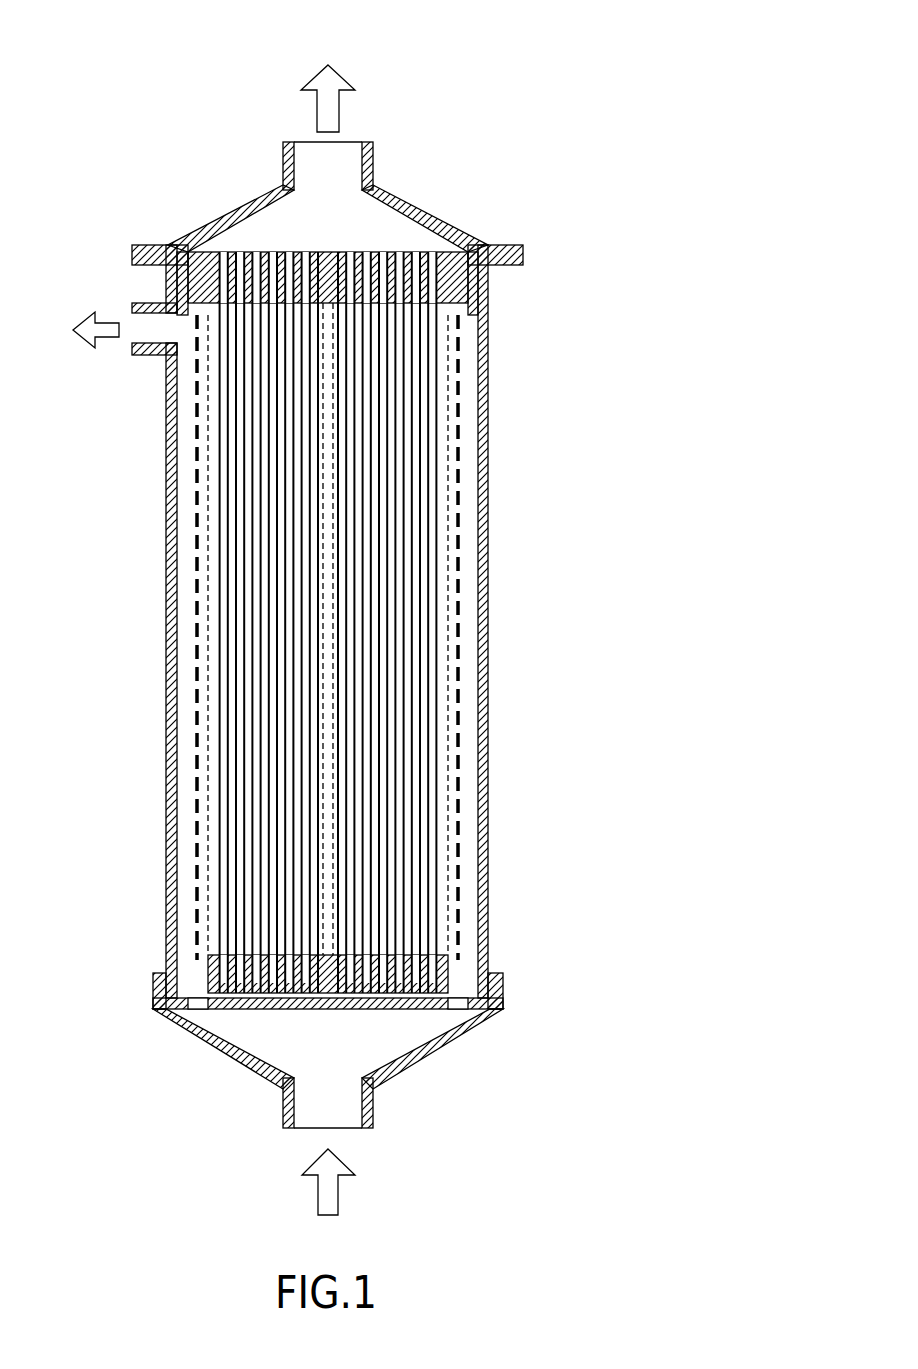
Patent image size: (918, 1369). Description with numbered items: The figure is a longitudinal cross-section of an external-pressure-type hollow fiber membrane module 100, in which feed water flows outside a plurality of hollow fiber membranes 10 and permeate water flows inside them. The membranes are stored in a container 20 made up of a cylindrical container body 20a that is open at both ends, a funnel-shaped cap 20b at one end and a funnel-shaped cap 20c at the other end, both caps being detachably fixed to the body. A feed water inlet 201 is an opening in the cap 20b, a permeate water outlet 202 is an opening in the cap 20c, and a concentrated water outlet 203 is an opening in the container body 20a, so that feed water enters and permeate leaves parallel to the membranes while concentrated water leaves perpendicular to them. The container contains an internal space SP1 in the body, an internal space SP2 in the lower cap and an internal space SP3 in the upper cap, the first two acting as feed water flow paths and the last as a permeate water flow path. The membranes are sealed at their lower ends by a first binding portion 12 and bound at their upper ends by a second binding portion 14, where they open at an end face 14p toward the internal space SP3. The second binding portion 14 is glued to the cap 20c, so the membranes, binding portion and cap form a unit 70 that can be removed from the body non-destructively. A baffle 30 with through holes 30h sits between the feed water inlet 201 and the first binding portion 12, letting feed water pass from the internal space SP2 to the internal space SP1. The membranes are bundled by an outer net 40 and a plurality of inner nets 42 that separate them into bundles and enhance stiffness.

The hollow fiber membrane module 100 is at (334, 610).
The unit 70 is at (283, 141).
The permeate water outlet 202 is at (283, 171).
The end face 14p is at (190, 247).
The internal space SP3 is at (373, 228).
The cap 20c is at (440, 222).
The second binding portion 14 is at (342, 249).
The container 20 is at (342, 622).
The container body 20a is at (490, 449).
The hollow fiber membranes 10 is at (235, 550).
The internal space SP1 is at (188, 597).
The outer net 40 is at (458, 735).
The inner nets 42 is at (206, 818).
The first binding portion 12 is at (208, 972).
The baffle 30 is at (334, 1056).
The through holes 30h is at (193, 1022).
The feed water inlet 201 is at (287, 1107).
The internal space SP2 is at (375, 1032).
The cap 20b is at (418, 1060).
The concentrated water outlet 203 is at (150, 352).